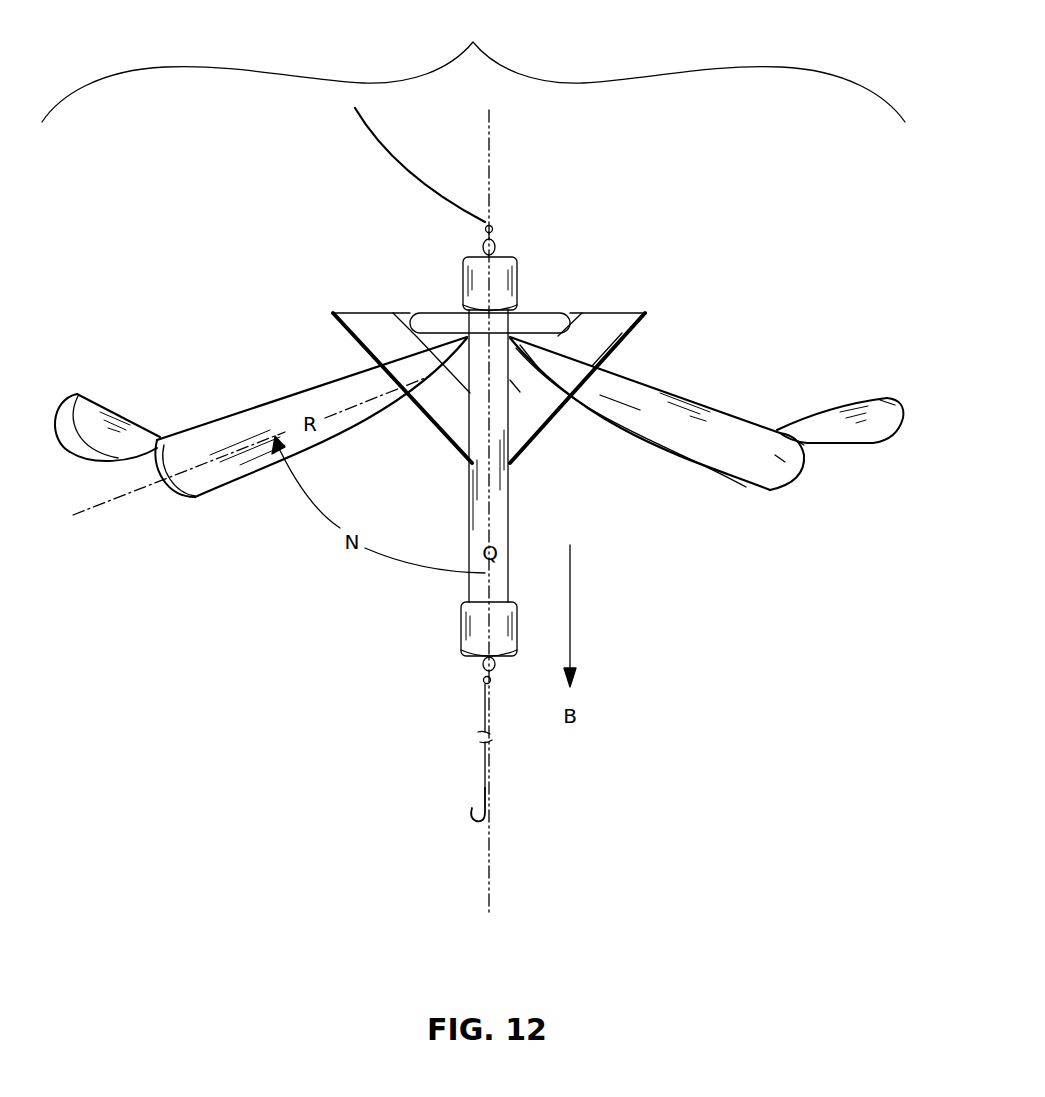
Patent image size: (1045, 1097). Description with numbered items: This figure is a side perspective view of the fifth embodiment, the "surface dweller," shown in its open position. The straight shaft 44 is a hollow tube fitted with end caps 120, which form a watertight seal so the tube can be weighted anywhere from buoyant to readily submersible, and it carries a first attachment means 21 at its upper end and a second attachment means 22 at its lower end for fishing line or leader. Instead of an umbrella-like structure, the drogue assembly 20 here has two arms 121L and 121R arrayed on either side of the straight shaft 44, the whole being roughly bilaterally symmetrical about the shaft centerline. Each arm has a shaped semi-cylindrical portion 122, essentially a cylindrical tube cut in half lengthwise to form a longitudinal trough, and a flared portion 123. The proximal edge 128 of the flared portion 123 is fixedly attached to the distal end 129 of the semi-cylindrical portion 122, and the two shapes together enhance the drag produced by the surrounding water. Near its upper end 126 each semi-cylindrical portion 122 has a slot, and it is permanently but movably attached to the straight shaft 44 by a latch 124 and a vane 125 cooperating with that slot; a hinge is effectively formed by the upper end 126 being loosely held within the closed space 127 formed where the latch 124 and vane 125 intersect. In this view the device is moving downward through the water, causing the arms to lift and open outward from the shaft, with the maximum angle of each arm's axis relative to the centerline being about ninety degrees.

The drogue assembly 20 is at (473, 114).
The first attachment means 21 is at (516, 210).
The end caps 120 is at (490, 292).
The straight shaft 44 is at (475, 583).
The latch 124 is at (522, 327).
The vane 125 is at (622, 327).
The upper end 126 is at (535, 355).
The closed space 127 is at (517, 373).
The left arm 121L is at (231, 343).
The right arm 121R is at (777, 333).
The shaped semi-cylindrical portion 122 is at (620, 403).
The flared portion 123 is at (886, 413).
The proximal edge 128 is at (802, 435).
The distal end 129 is at (783, 450).
The second attachment means 22 is at (447, 677).